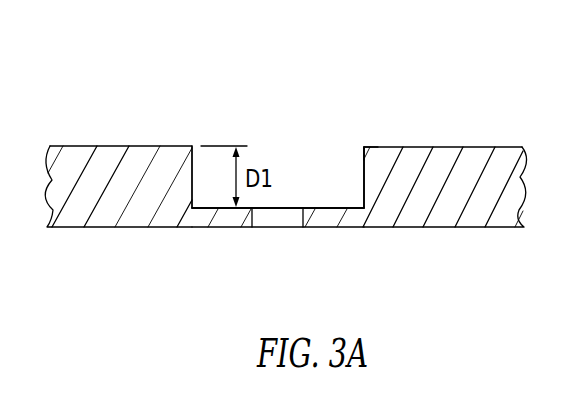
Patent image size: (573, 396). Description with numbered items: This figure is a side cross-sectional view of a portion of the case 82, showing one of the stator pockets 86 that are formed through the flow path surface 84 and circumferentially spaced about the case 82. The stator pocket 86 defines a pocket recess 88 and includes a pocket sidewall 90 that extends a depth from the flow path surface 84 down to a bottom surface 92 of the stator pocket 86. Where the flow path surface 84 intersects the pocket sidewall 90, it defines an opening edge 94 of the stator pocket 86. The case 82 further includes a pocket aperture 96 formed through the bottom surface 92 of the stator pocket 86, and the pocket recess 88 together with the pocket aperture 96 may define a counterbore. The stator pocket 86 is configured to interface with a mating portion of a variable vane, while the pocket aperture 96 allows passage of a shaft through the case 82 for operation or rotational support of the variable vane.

The case 82 is at (154, 123).
The flow path surface 84 is at (457, 147).
The stator pocket 86 is at (294, 107).
The pocket recess 88 is at (333, 191).
The pocket sidewall 90 is at (361, 178).
The bottom surface 92 is at (221, 208).
The opening edge 94 is at (368, 138).
The pocket aperture 96 is at (282, 238).